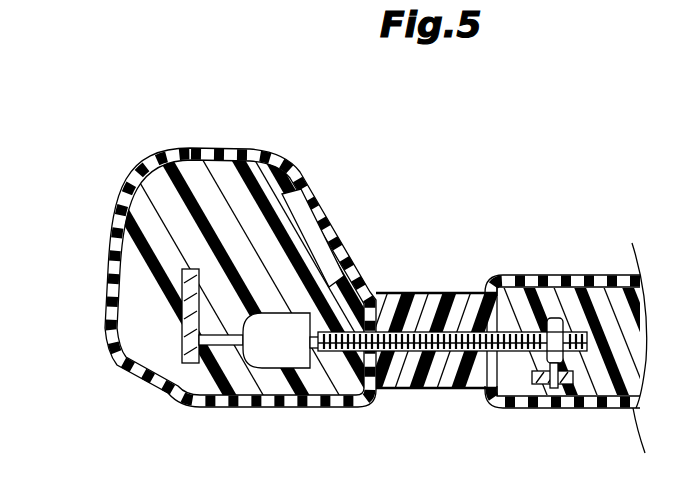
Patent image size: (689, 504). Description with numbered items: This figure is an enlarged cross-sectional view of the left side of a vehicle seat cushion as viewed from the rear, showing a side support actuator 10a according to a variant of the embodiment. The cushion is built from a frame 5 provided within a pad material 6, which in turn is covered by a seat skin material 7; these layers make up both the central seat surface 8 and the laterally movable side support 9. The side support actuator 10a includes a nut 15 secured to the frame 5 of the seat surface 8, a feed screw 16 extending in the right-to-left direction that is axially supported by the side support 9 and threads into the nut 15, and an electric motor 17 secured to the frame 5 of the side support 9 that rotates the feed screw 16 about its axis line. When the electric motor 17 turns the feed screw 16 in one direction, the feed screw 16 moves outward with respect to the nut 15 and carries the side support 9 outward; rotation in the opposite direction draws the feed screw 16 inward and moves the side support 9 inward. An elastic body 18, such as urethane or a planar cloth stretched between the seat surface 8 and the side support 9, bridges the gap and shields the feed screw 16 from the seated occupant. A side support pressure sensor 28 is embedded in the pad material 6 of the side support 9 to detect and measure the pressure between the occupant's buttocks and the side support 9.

The frame 5 is at (190, 329).
The pad material 6 is at (242, 383).
The seat skin material 7 is at (146, 382).
The seat surface 8 is at (567, 273).
The side support 9 is at (112, 215).
The side support actuator 10a is at (438, 275).
The nut 15 is at (527, 277).
The feed screw 16 is at (347, 357).
The electric motor 17 is at (282, 372).
The elastic body 18 is at (420, 380).
The side support pressure sensor 28 is at (327, 207).